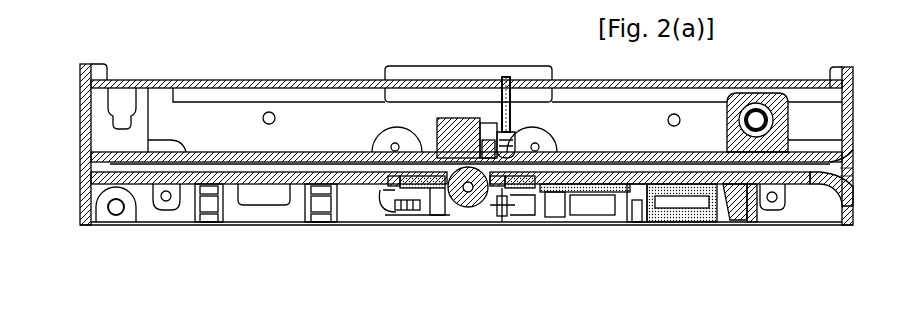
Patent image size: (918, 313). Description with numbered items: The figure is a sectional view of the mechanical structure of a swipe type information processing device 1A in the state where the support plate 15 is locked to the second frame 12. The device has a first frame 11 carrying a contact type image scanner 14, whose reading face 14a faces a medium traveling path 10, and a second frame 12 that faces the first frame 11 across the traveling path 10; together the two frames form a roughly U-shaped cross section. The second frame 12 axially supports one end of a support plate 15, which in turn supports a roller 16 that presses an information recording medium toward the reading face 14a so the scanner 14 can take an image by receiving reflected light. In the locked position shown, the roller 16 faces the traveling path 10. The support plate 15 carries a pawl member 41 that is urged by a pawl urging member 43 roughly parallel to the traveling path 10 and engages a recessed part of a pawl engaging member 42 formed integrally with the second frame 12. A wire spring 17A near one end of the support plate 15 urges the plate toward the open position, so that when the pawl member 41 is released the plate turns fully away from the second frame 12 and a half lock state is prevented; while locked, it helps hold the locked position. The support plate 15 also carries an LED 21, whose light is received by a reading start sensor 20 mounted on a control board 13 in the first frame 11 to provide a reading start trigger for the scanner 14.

The information processing device 1A is at (788, 66).
The medium traveling path 10 is at (805, 172).
The first frame 11 is at (80, 157).
The second frame 12 is at (80, 183).
The control board 13 is at (156, 80).
The contact type image scanner 14 is at (478, 118).
The reading face 14a is at (455, 118).
The support plate 15 is at (687, 226).
The roller 16 is at (463, 226).
The wire spring 17A is at (407, 214).
The reading start sensor 20 is at (507, 135).
The LED 21 is at (505, 226).
The pawl member 41 is at (735, 215).
The pawl engaging member 42 is at (757, 212).
The pawl urging member 43 is at (637, 207).